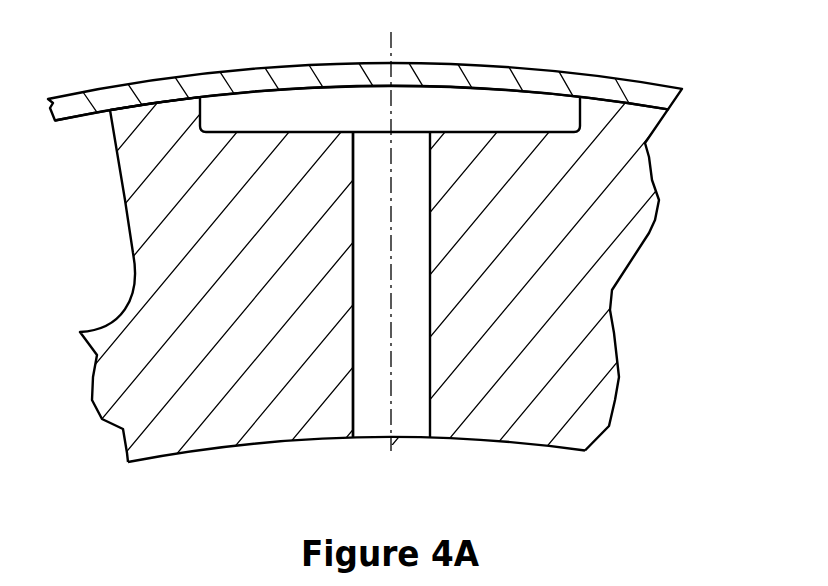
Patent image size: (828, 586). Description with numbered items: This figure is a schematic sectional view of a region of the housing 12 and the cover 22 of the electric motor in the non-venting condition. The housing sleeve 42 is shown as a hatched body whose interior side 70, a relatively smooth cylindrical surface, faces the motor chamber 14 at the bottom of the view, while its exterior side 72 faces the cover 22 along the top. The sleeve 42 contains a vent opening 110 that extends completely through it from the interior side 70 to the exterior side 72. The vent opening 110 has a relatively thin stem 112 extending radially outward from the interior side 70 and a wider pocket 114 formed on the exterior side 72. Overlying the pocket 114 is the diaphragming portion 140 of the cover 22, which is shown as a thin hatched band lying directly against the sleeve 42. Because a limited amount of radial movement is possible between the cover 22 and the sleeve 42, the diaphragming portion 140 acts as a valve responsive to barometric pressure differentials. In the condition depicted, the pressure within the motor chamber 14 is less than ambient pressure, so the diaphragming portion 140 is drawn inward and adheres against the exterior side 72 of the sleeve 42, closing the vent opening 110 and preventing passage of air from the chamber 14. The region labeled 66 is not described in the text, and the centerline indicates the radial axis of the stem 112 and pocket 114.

The housing 12 is at (620, 187).
The housing sleeve 42 is at (565, 222).
The interior side 70 is at (526, 446).
The diaphragming portion 140 is at (436, 80).
The cover 22 is at (627, 97).
The exterior side 72 is at (150, 100).
The pocket 114 is at (289, 113).
The stem 112 is at (399, 416).
The vent opening 110 is at (351, 393).
The left region 66 is at (108, 245).
The chamber 14 is at (383, 511).